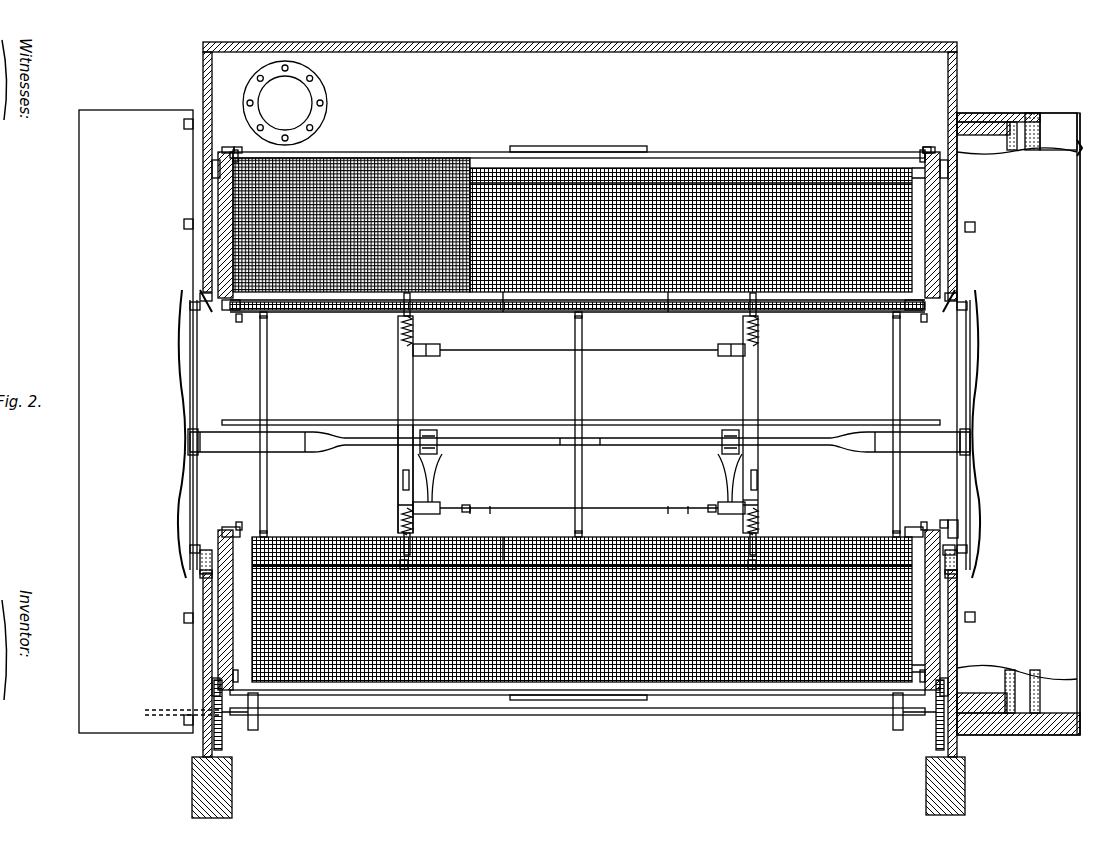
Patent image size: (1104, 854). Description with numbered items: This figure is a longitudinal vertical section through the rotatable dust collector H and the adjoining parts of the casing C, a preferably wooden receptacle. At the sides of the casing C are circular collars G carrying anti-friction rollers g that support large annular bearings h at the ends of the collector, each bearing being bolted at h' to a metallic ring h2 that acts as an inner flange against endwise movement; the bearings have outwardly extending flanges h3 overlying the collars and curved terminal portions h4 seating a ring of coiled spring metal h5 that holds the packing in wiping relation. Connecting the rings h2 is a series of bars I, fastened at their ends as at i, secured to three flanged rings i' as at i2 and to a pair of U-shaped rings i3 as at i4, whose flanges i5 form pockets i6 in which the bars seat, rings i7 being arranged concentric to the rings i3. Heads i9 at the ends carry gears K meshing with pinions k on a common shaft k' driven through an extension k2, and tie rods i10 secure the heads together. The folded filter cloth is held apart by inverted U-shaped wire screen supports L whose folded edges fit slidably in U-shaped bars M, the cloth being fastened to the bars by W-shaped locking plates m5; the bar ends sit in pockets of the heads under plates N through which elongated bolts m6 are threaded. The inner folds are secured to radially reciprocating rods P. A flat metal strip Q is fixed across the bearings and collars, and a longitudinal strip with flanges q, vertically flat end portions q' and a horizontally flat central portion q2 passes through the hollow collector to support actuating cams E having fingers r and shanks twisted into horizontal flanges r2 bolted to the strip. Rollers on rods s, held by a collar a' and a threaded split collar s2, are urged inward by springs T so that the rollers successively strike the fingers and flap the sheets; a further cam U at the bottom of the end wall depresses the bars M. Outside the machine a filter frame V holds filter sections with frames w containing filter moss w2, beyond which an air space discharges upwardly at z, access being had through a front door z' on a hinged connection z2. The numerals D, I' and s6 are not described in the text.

The casing C is at (588, 42).
The flanged opening D is at (318, 104).
The filter frame V is at (1007, 106).
The rotatable dust collector H is at (218, 244).
The wire screen support L is at (655, 180).
The lower screen frame I' is at (582, 499).
The U-shaped bar M is at (738, 152).
The locking plate m5 is at (808, 152).
The elongated bolt m6 is at (236, 149).
The common shaft k' is at (578, 444).
The flanged ring i' is at (580, 424).
The U-shaped ring i3 is at (414, 396).
The fastening of bars to U-shaped rings i4 is at (413, 320).
The flange i5 is at (402, 305).
The fastening of bars to flanged rings i2 is at (270, 320).
The end fastening of bars i is at (572, 425).
The pocket i6 is at (498, 522).
The concentric ring i7 is at (404, 483).
The head i9 is at (246, 140).
The tie rod i10 is at (915, 180).
The bar I is at (581, 467).
The flat metal strip Q is at (187, 450).
The flange q is at (600, 454).
The vertically flat end portion q' is at (587, 454).
The horizontally flat central portion q2 is at (632, 447).
The spring T is at (758, 352).
The cam finger r is at (434, 504).
The horizontal flange r2 is at (440, 440).
The actuating cam E is at (434, 473).
The rod s is at (445, 512).
The threaded split collar s2 is at (404, 506).
The spring seat s6 is at (768, 505).
The collar a' is at (589, 509).
The rod P is at (668, 300).
The pinion k is at (579, 717).
The cam U is at (262, 726).
The extension k2 is at (145, 712).
The gear K is at (212, 168).
The plate N is at (222, 151).
The circular collar G is at (207, 300).
The curved terminal portion h4 is at (1008, 293).
The outwardly extending flange h3 is at (190, 306).
The metallic ring h2 is at (241, 324).
The bolt h' is at (969, 508).
The annular bearing h is at (973, 526).
The ring of coiled spring metal h5 is at (958, 553).
The anti-friction roller g is at (200, 565).
The surrounding frame w is at (1028, 118).
The filter moss w2 is at (1012, 150).
The upward discharge opening z is at (1058, 131).
The hinged connection z2 is at (1075, 151).
The front door z' is at (1062, 424).